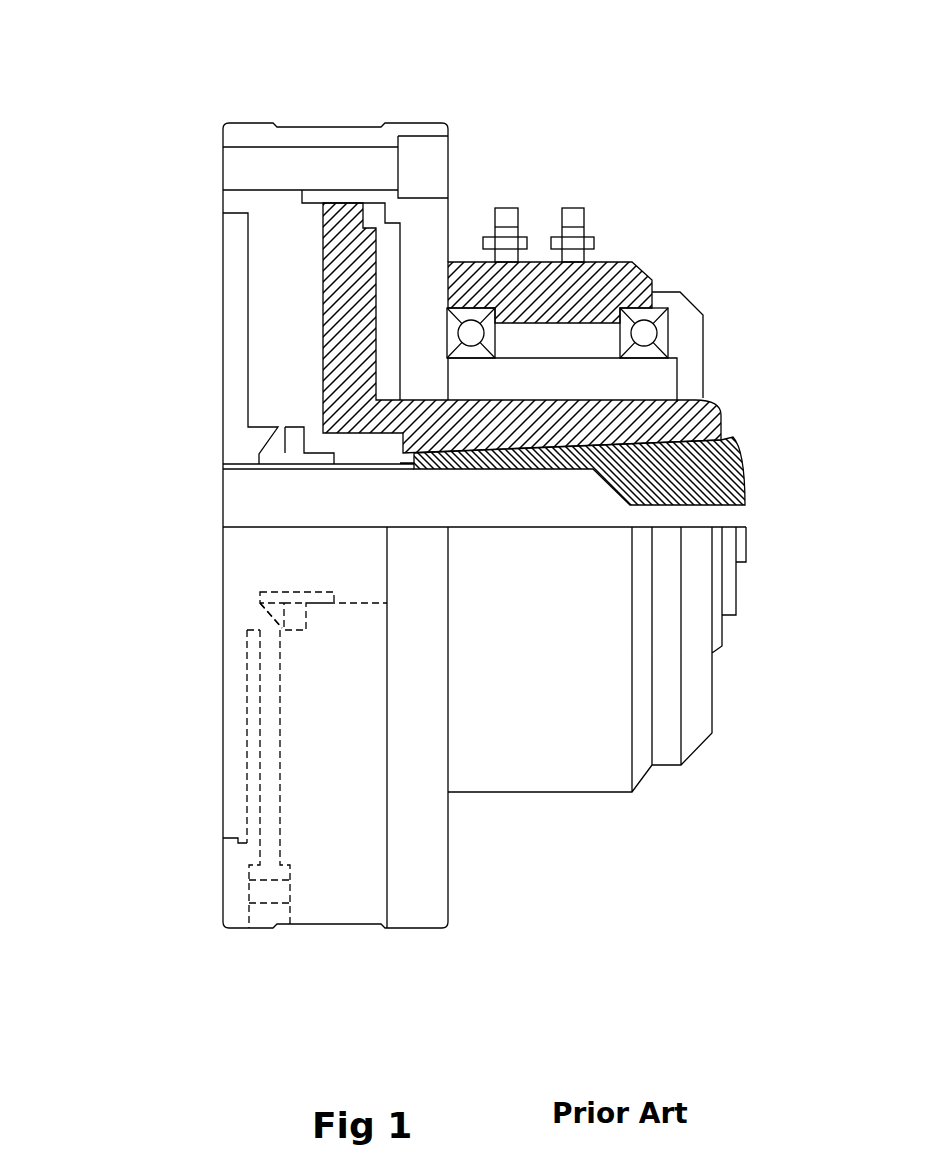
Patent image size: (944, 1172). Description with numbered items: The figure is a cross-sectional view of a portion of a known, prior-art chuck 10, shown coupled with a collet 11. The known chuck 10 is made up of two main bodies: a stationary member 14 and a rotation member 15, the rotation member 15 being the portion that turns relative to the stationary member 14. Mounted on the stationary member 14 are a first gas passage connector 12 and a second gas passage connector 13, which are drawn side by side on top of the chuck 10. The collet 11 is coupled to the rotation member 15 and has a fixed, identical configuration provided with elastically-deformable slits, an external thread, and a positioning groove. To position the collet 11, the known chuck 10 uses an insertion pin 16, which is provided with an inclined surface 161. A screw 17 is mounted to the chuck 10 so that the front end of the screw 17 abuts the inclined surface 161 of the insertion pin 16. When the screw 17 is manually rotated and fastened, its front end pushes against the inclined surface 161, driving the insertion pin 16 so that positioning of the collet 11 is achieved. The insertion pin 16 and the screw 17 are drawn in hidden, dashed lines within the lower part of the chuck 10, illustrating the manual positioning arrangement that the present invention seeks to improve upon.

The known chuck 10 is at (672, 201).
The collet 11 is at (705, 475).
The first gas passage connector 12 is at (503, 220).
The second gas passage connector 13 is at (571, 220).
The stationary member 14 is at (597, 287).
The rotation member 15 is at (697, 398).
The insertion pin 16 is at (260, 600).
The inclined surface 161 is at (270, 622).
The screw 17 is at (268, 775).